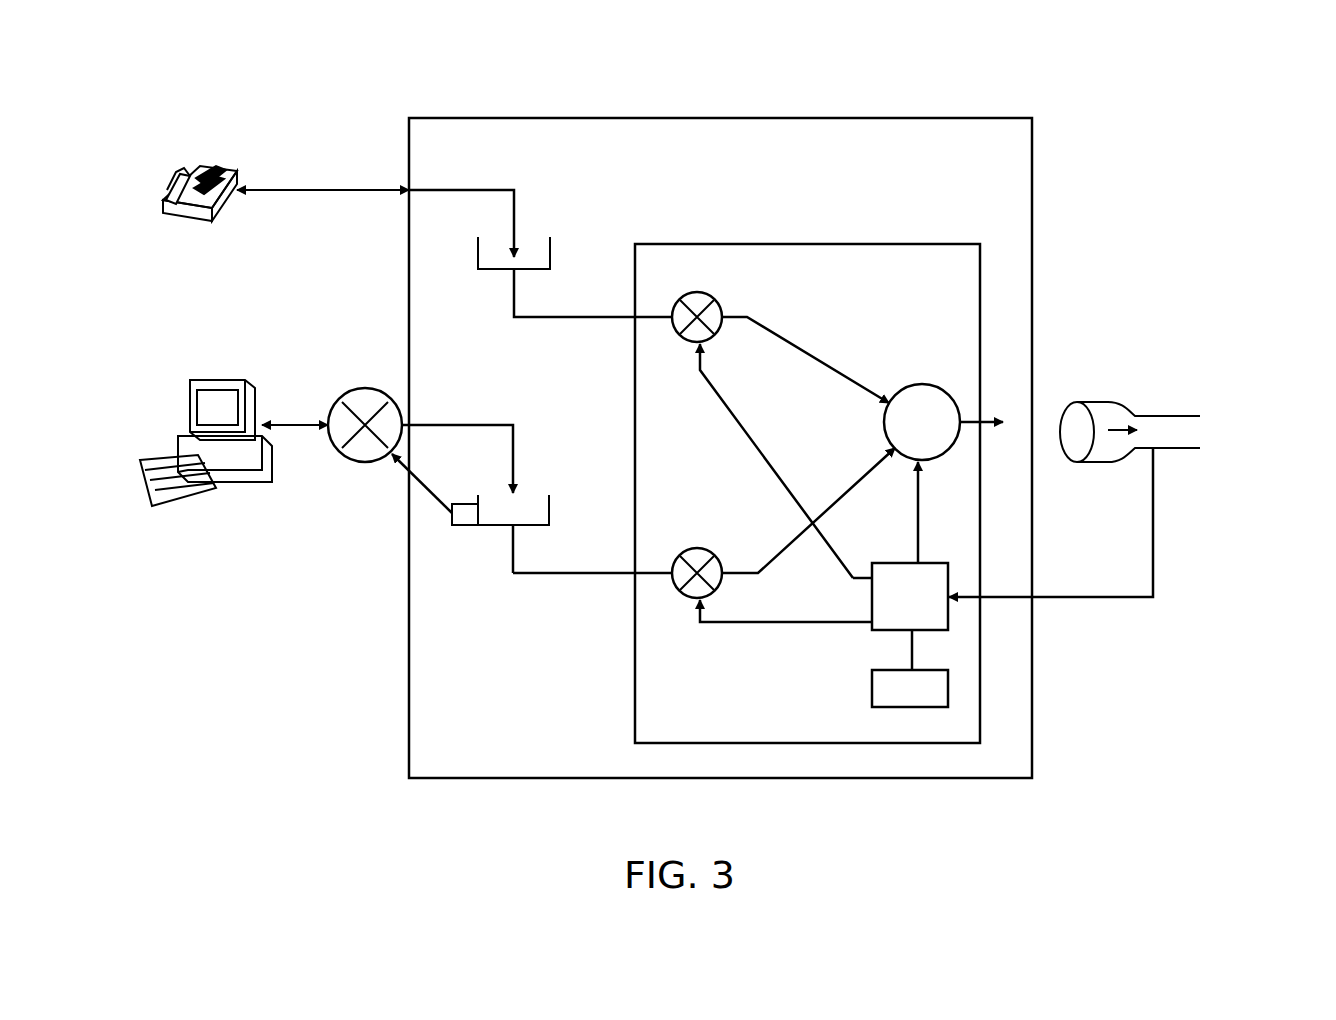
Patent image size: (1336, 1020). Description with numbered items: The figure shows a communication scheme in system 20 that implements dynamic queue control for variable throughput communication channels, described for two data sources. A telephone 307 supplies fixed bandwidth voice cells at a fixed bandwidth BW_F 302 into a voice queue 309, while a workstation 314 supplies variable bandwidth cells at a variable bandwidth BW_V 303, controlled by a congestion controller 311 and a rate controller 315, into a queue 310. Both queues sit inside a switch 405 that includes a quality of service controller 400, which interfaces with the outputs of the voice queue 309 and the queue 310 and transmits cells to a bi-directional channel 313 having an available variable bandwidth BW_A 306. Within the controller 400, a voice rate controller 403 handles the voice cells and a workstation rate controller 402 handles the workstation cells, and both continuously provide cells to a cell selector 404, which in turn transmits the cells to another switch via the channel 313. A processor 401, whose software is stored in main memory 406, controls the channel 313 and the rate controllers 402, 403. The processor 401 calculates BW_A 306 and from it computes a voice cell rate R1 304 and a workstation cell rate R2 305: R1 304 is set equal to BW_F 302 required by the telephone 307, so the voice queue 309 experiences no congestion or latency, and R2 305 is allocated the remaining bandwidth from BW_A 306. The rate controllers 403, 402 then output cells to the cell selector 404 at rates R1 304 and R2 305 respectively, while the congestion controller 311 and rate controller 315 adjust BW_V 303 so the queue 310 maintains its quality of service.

The system 20 is at (266, 94).
The fixed bandwidth (BW_F) 302 is at (475, 166).
The variable bandwidth (BW_V) 303 is at (487, 398).
The voice cell rate (R_1) 304 is at (822, 330).
The workstation cell rate (R_2) 305 is at (803, 582).
The available variable bandwidth (BW_A) 306 is at (1238, 456).
The telephone 307 is at (180, 222).
The voice queue 309 is at (553, 260).
The queue 310 is at (553, 510).
The congestion controller 311 is at (464, 530).
The channel 313 is at (1108, 390).
The workstation 314 is at (178, 505).
The rate controller 315 is at (352, 388).
The quality of service controller 400 is at (822, 243).
The processor 401 is at (932, 560).
The workstation rate controller 402 is at (718, 553).
The voice rate controller 403 is at (718, 297).
The cell selector 404 is at (952, 388).
The switch 405 is at (843, 117).
The main memory 406 is at (872, 692).